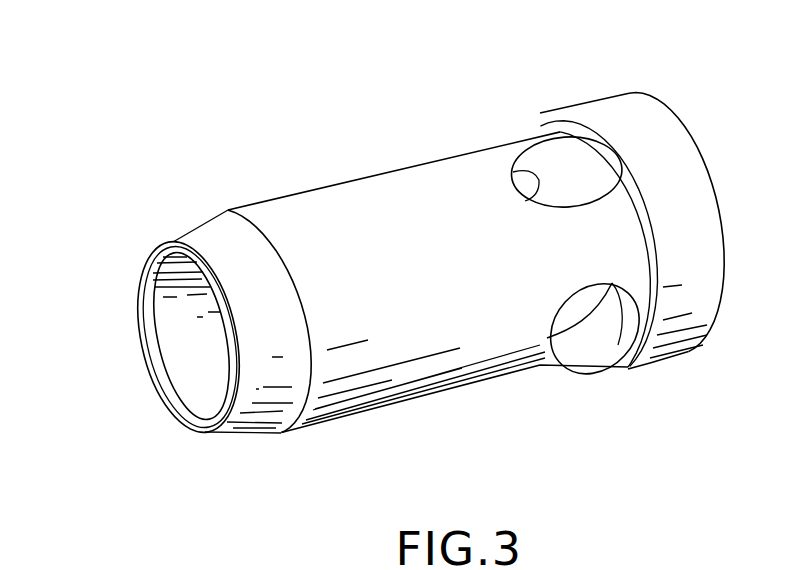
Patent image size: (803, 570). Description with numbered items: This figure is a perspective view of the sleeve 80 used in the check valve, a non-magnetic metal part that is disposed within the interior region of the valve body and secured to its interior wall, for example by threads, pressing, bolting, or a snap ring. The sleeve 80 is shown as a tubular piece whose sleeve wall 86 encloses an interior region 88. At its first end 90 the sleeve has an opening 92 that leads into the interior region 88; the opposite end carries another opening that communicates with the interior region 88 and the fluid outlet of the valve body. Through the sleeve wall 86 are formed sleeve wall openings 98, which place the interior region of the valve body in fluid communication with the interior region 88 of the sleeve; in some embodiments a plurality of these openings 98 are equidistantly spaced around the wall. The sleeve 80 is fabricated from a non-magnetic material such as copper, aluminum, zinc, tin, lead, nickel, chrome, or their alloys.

The sleeve 80 is at (264, 88).
The sleeve wall 86 is at (417, 162).
The interior region 88 is at (590, 303).
The first end 90 is at (147, 265).
The opening 92 is at (173, 358).
The sleeve wall opening 98 is at (545, 162).